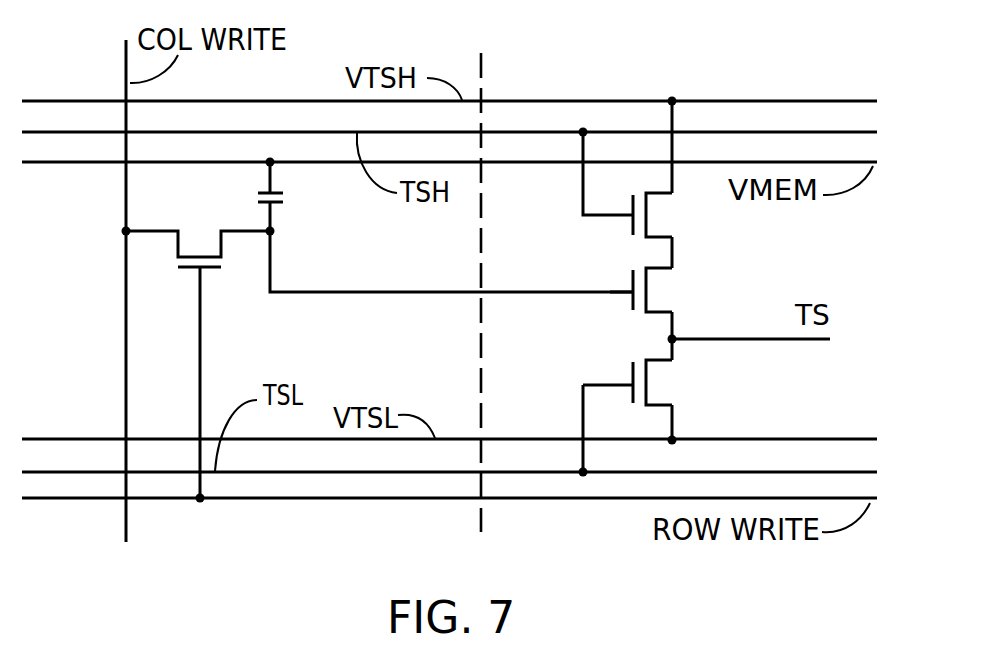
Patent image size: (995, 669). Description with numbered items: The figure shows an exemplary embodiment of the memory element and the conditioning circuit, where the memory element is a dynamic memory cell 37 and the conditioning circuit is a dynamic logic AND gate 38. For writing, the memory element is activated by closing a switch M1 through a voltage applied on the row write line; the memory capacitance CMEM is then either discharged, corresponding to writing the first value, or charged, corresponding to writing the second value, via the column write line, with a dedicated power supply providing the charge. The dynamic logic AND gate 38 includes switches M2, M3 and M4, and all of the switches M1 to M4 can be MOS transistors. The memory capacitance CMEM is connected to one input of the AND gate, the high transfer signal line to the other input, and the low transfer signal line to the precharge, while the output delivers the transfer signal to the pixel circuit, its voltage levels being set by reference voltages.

The dynamic memory cell 37 is at (378, 265).
The dynamic logic AND gate 38 is at (649, 253).
The switch M1 is at (193, 255).
The memory capacitance CMEM is at (445, 225).
The switch M2 is at (650, 280).
The switch M3 is at (650, 205).
The switch M4 is at (650, 372).